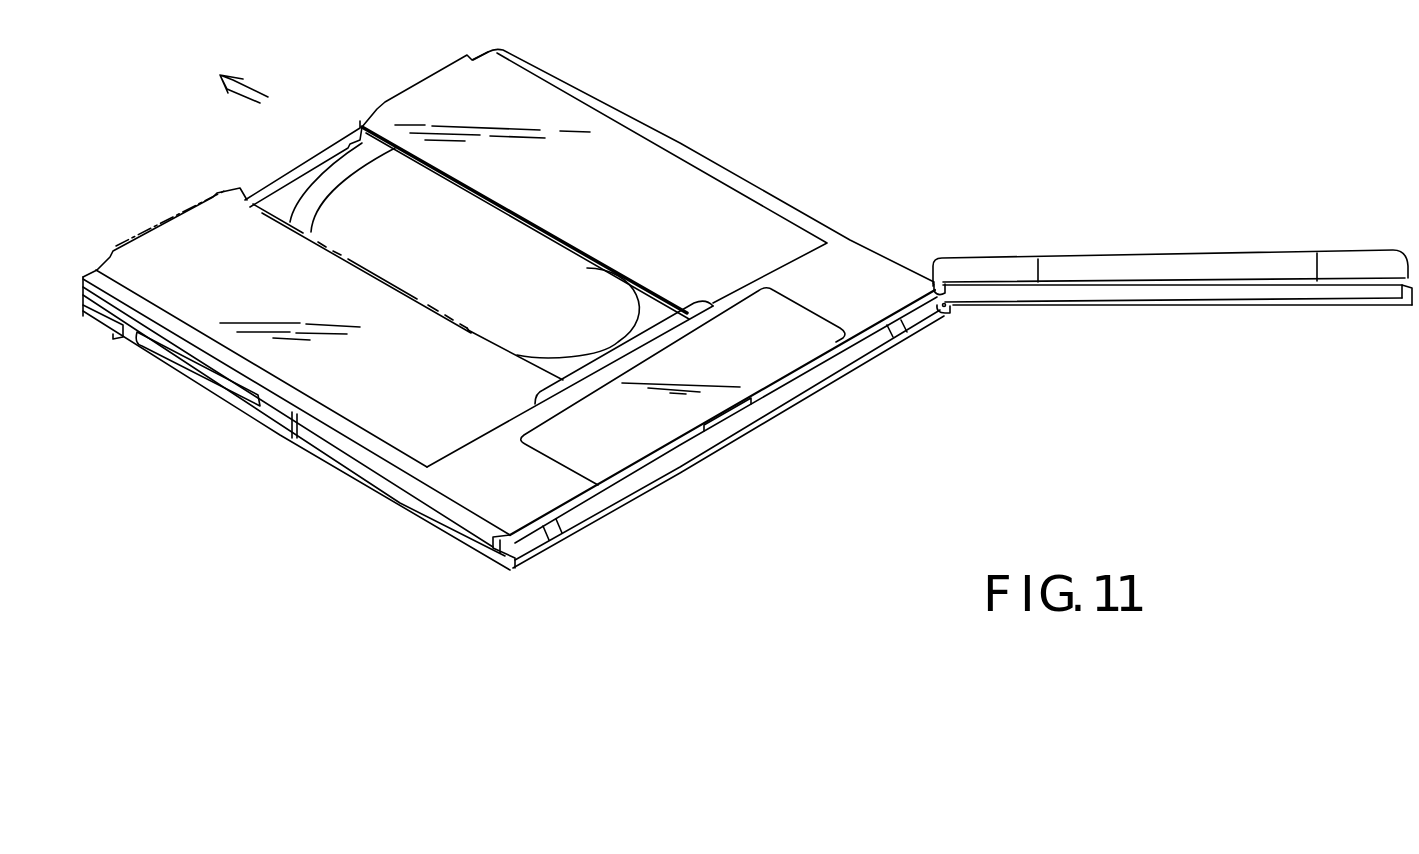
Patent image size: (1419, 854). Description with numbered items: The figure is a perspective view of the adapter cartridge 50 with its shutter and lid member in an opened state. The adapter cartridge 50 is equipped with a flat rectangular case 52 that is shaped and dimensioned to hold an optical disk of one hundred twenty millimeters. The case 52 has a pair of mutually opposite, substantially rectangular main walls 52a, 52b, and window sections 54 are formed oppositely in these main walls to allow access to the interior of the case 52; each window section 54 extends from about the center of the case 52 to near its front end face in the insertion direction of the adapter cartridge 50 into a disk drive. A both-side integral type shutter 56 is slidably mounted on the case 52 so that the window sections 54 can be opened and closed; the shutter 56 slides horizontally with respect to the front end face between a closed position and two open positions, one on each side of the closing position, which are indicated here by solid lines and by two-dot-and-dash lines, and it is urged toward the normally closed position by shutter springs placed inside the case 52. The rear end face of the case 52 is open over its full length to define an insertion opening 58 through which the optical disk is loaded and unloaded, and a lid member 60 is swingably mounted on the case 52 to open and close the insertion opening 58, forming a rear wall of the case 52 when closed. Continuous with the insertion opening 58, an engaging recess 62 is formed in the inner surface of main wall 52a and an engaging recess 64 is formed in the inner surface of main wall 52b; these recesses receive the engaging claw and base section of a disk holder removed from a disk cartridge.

The adapter cartridge 50 is at (681, 115).
The case 52 is at (850, 211).
The main wall 52a is at (480, 491).
The main wall 52b is at (364, 484).
The window section 54 is at (498, 238).
The shutter 56 is at (420, 110).
The insertion opening 58 is at (619, 494).
The lid member 60 is at (1082, 257).
The engaging recess 62 is at (733, 414).
The engaging recess 64 is at (871, 348).